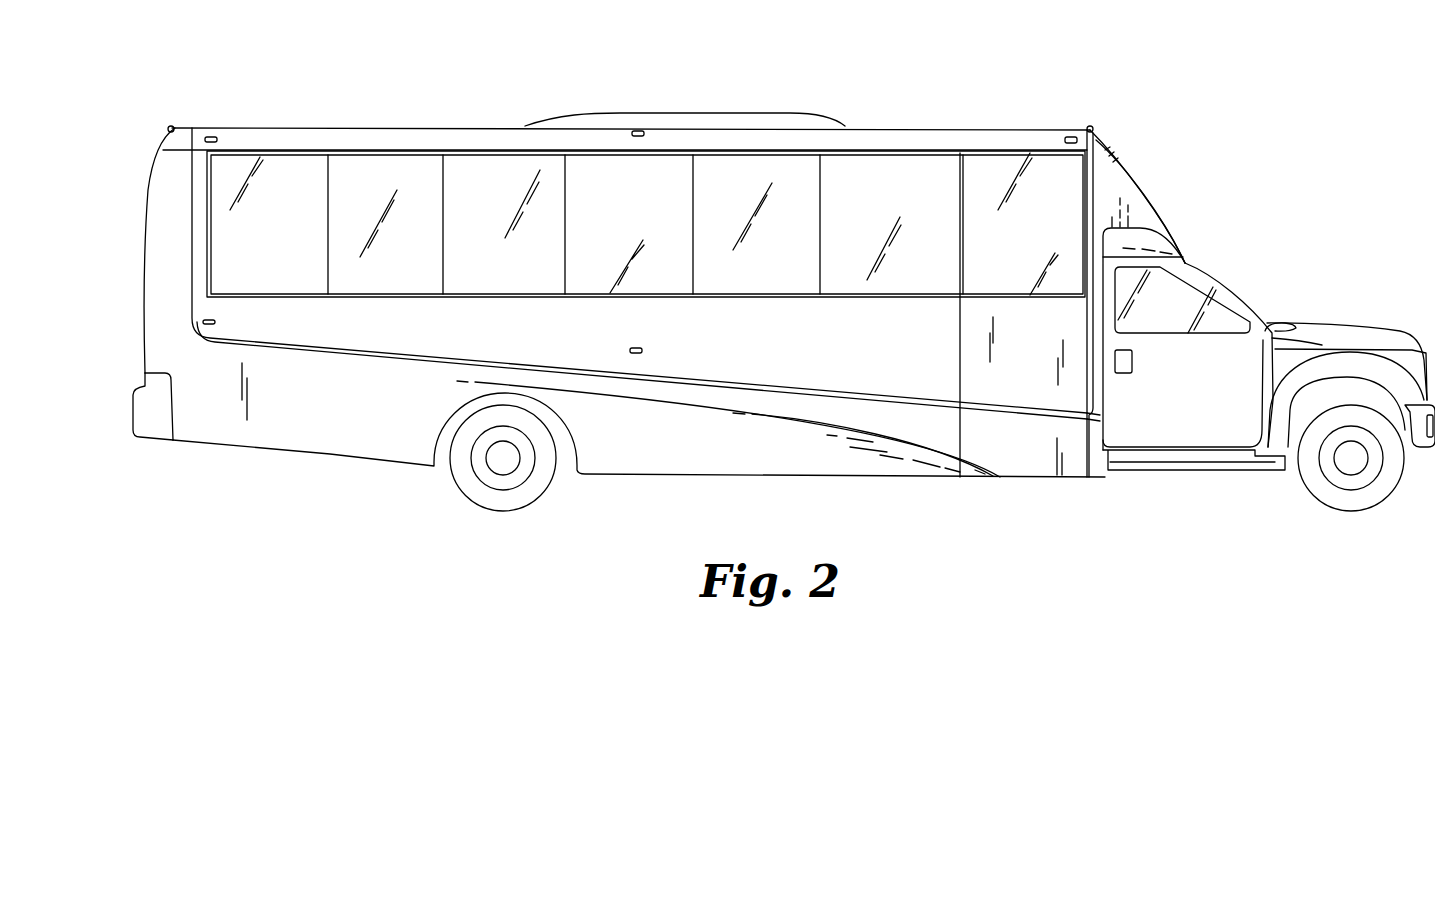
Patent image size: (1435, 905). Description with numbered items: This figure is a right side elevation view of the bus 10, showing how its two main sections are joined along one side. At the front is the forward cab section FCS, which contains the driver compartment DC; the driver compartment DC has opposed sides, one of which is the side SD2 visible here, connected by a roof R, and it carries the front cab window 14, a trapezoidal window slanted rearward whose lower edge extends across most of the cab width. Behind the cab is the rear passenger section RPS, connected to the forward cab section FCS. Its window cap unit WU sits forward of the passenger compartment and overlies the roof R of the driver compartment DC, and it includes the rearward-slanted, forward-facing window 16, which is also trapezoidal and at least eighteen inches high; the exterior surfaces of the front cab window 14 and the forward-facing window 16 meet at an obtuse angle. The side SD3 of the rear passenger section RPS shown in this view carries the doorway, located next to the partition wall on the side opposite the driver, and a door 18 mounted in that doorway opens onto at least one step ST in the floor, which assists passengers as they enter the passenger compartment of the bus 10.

The bus 10 is at (1081, 492).
The front cab window 14 is at (1230, 293).
The forward-facing window 16 is at (1117, 153).
The door 18 is at (982, 367).
The rear passenger section RPS is at (458, 116).
The window cap unit WU is at (1113, 182).
The roof R is at (1158, 242).
The driver compartment DC is at (1189, 293).
The forward cab section FCS is at (1313, 312).
The side SD2 is at (1207, 378).
The side SD3 is at (642, 445).
The step ST is at (1023, 458).